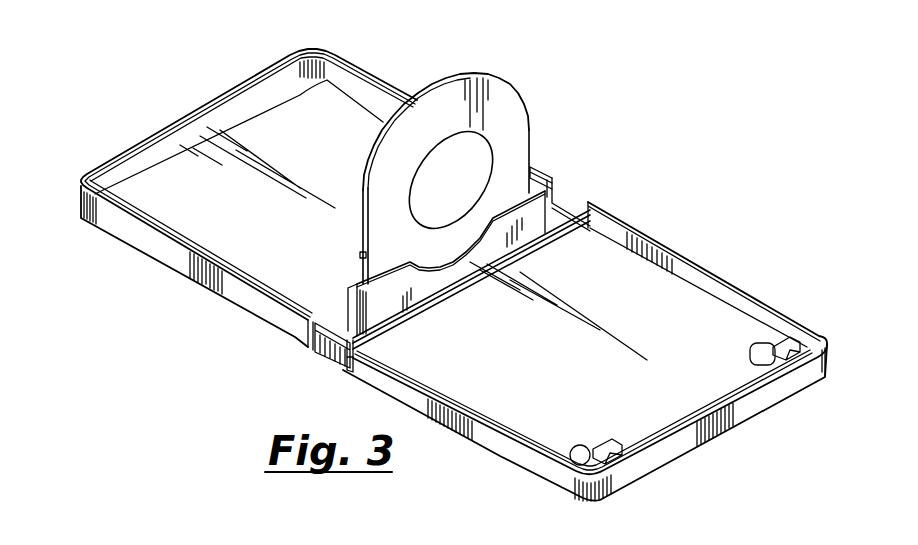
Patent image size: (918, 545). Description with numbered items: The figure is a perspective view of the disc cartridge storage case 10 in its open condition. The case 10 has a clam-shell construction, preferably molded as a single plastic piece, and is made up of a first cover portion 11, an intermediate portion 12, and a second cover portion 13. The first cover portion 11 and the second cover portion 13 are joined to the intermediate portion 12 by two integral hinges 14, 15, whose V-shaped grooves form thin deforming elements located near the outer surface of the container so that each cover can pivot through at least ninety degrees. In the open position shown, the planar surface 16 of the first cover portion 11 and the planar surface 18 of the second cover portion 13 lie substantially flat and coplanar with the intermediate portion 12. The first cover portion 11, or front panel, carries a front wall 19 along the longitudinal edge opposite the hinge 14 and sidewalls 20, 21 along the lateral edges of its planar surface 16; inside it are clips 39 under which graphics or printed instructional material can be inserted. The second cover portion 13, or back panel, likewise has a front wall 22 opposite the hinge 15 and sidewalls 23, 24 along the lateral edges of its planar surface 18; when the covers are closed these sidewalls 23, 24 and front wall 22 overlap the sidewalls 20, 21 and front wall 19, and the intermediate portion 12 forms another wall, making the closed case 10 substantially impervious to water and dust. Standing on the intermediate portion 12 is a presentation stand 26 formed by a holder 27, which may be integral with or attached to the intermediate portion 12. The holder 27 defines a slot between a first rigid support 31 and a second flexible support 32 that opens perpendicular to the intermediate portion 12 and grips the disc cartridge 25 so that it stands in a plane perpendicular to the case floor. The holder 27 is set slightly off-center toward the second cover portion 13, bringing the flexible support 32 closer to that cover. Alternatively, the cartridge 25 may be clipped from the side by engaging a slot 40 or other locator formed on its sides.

The disc cartridge storage case 10 is at (502, 478).
The first cover portion 11 is at (723, 317).
The intermediate portion 12 is at (347, 357).
The second cover portion 13 is at (143, 243).
The hinge 14 is at (347, 372).
The hinge 15 is at (317, 345).
The planar surface 16 is at (628, 275).
The planar surface 18 is at (287, 103).
The front wall 19 is at (673, 450).
The sidewall 20 is at (707, 290).
The sidewall 21 is at (417, 397).
The front wall 22 is at (150, 153).
The sidewall 23 is at (363, 92).
The sidewall 24 is at (200, 277).
The disc cartridge 25 is at (514, 132).
The presentation stand 26 is at (556, 170).
The holder 27 is at (310, 317).
The first rigid support 31 is at (537, 204).
The second flexible support 32 is at (350, 292).
The clips 39 is at (760, 353).
The slot 40 is at (360, 255).